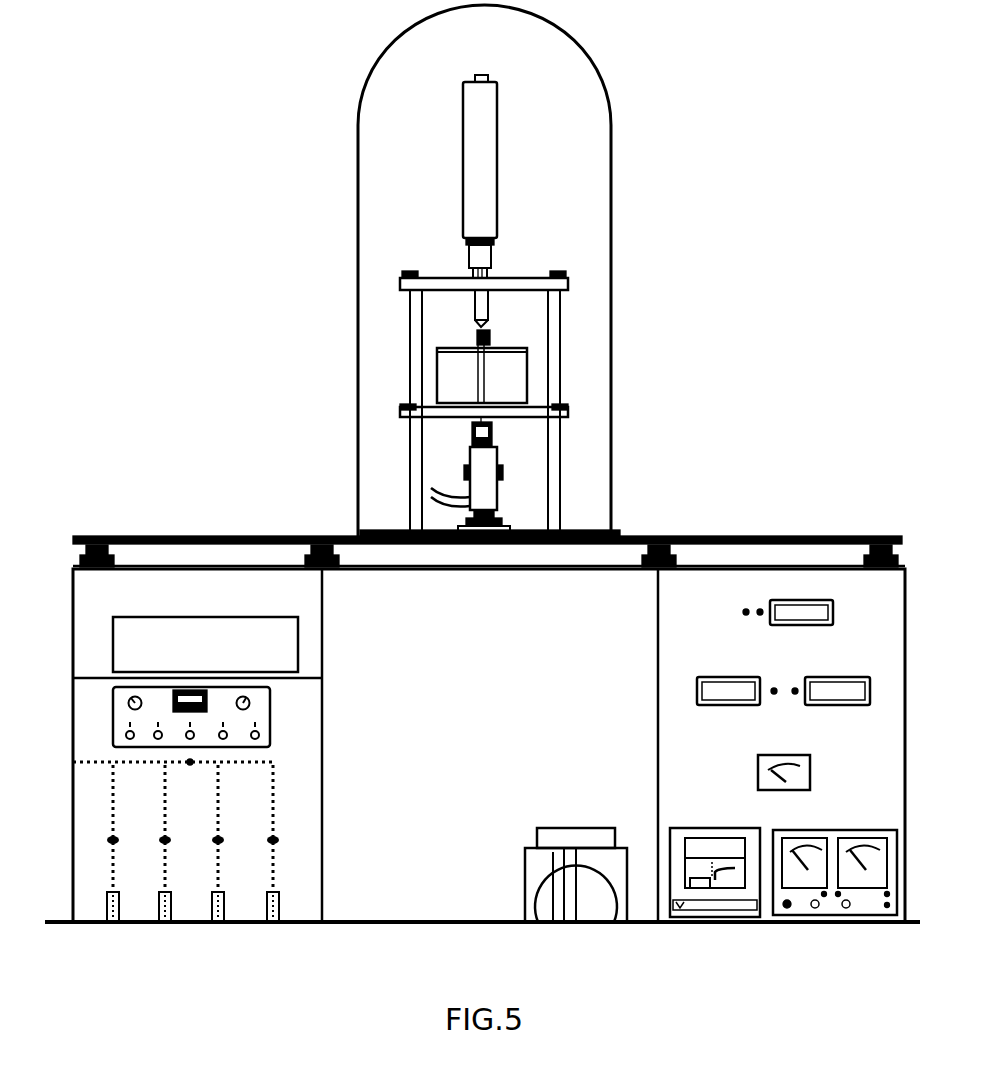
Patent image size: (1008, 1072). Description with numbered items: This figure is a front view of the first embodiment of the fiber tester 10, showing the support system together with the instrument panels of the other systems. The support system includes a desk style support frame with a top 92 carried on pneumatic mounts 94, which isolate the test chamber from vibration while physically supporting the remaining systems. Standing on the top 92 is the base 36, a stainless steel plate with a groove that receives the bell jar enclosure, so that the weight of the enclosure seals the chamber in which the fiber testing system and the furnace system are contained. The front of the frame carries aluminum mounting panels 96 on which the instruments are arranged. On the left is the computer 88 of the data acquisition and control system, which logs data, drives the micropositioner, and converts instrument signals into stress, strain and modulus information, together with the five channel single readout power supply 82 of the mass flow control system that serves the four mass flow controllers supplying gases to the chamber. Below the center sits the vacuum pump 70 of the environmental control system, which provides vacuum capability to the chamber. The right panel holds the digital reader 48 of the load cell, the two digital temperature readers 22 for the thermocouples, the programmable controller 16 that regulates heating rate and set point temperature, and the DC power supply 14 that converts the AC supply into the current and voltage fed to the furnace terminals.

The fiber tester 10 is at (168, 258).
The DC power supply 14 is at (835, 835).
The programmable controller 16 is at (722, 836).
The digital temperature readers 22 is at (826, 672).
The base 36 is at (342, 527).
The digital reader 48 is at (760, 602).
The vacuum pump 70 is at (588, 836).
The five channel single readout power supply 82 is at (247, 719).
The computer 88 is at (232, 641).
The top 92 is at (727, 538).
The pneumatic mounts 94 is at (302, 533).
The aluminum mounting panels 96 is at (340, 610).